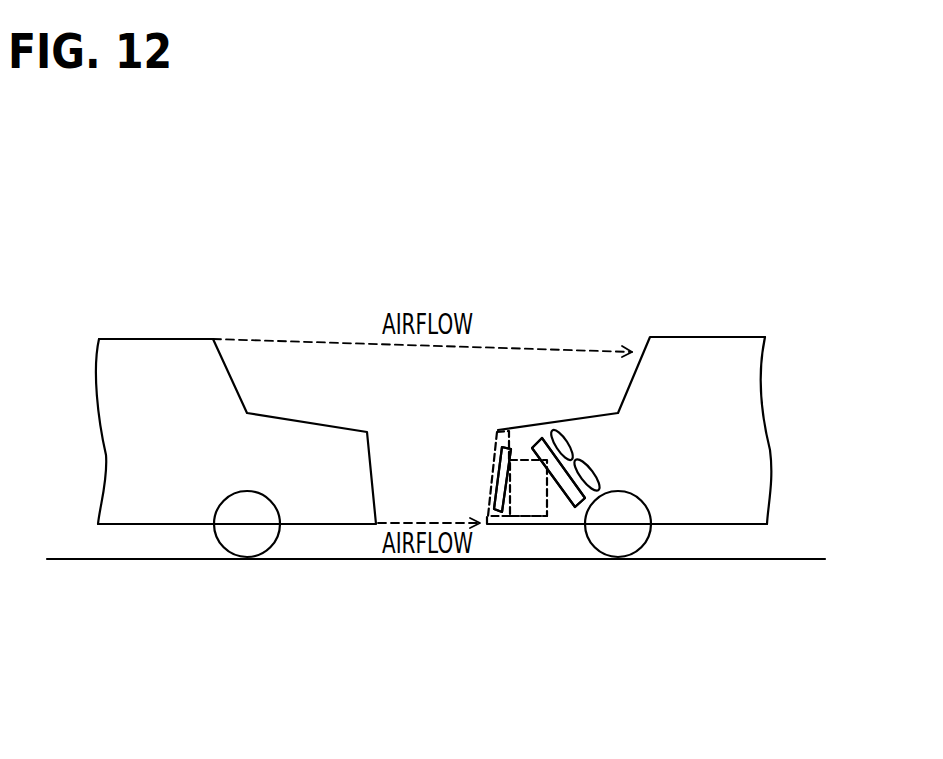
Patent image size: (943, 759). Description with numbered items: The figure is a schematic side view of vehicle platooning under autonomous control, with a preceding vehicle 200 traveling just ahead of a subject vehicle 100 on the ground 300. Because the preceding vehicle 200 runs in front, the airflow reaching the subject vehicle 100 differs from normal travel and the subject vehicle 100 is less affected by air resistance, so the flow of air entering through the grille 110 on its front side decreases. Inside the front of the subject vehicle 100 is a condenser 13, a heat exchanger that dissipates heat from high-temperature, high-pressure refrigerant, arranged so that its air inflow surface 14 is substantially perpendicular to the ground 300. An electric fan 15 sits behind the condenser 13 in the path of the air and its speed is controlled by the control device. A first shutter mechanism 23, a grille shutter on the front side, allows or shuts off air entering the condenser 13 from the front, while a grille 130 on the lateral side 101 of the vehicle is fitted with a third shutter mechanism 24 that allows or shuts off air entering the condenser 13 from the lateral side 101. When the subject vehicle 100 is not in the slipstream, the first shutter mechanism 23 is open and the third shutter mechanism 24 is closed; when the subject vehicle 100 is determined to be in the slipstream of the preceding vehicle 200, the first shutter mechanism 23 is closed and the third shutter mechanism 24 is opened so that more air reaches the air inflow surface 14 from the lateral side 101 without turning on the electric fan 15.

The subject vehicle 100 is at (707, 337).
The preceding vehicle 200 is at (158, 339).
The ground 300 is at (800, 557).
The condenser 13 is at (535, 447).
The air inflow surface 14 is at (566, 497).
The electric fan 15 is at (558, 432).
The first shutter mechanism 23 is at (497, 434).
The third shutter mechanism 24 is at (528, 492).
The lateral side 101 is at (502, 513).
The grille 110 is at (498, 458).
The grille 130 is at (522, 515).